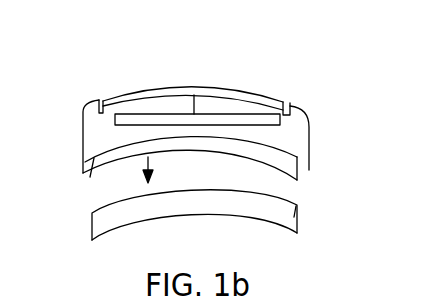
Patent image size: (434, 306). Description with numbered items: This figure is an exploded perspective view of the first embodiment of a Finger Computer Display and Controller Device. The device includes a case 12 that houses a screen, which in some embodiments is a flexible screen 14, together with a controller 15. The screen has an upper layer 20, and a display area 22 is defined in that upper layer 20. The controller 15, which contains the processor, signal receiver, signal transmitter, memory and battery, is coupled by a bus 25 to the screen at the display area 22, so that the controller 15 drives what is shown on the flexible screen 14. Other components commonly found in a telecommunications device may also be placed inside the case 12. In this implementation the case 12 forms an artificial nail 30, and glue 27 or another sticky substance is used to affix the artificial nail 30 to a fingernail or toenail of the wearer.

The case 12 is at (311, 134).
The flexible screen 14 is at (103, 100).
The controller 15 is at (167, 118).
The screen upper layer 20 is at (176, 92).
The display area 22 is at (166, 89).
The bus 25 is at (197, 109).
The glue 27 is at (95, 162).
The artificial nail 30 is at (299, 202).